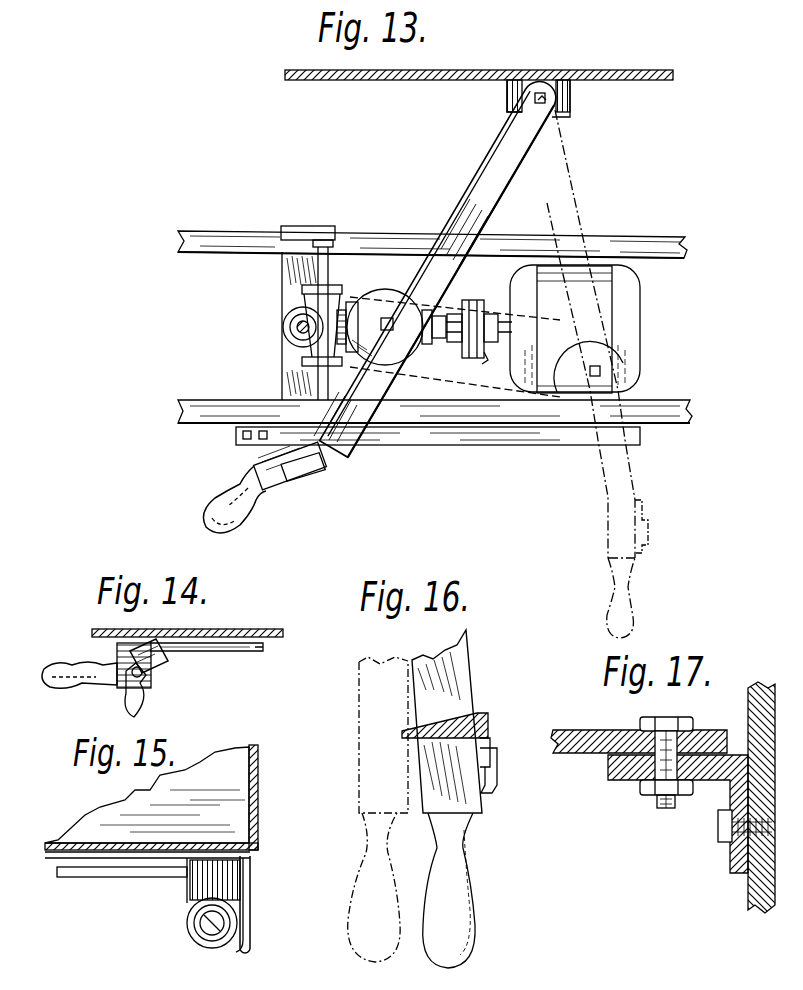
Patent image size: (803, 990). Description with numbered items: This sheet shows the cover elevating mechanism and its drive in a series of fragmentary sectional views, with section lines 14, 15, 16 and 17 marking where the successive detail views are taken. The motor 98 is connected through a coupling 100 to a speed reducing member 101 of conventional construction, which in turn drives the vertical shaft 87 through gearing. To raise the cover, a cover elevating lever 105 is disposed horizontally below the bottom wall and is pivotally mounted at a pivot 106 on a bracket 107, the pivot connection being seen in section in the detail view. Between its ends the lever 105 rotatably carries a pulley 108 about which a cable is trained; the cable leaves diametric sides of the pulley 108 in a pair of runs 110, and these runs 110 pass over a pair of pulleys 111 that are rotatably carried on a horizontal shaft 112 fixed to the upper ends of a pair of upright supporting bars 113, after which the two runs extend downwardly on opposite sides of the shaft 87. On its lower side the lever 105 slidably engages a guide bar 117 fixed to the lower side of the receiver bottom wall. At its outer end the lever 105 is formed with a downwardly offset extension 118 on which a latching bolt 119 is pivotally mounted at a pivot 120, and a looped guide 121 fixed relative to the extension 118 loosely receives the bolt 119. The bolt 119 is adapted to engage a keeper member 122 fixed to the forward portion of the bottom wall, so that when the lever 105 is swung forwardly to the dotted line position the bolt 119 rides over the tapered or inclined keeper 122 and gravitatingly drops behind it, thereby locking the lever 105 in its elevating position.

In FIG. 13, the section line 17— 17 is at (545, 200).
In FIG. 13, the section line 14— 14 is at (233, 553).
In FIG. 14, the section line 15— 15 is at (77, 717).
In FIG. 15, the section line 16— 16 is at (307, 857).
In FIG. 13, the vertical shaft 87 is at (290, 334).
In FIG. 13, the motor 98 is at (640, 296).
In FIG. 13, the coupling 100 is at (492, 367).
In FIG. 13, the speed reducing member 101 is at (420, 350).
In FIG. 13, the cover elevating lever 105 is at (450, 211).
In FIG. 14, the cover elevating lever 105 is at (240, 651).
In FIG. 15, the cover elevating lever 105 is at (188, 945).
In FIG. 16, the cover elevating lever 105 is at (458, 660).
In FIG. 17, the cover elevating lever 105 is at (574, 753).
In FIG. 13, the pivot 106 is at (557, 102).
In FIG. 17, the bracket 107 is at (707, 780).
In FIG. 13, the pulley 108 is at (388, 290).
In FIG. 13, the runs 110 is at (436, 306).
In FIG. 13, the pulleys 111 is at (340, 286).
In FIG. 13, the horizontal shaft 112 is at (328, 266).
In FIG. 13, the upright supporting bars 113 is at (303, 226).
In FIG. 13, the guide bar 117 is at (543, 446).
In FIG. 15, the guide bar 117 is at (97, 877).
In FIG. 14, the downwardly offset extension 118 is at (150, 677).
In FIG. 15, the downwardly offset extension 118 is at (192, 896).
In FIG. 13, the latching bolt 119 is at (318, 456).
In FIG. 14, the latching bolt 119 is at (120, 692).
In FIG. 15, the latching bolt 119 is at (250, 943).
In FIG. 16, the latching bolt 119 is at (484, 743).
In FIG. 14, the pivot 120 is at (142, 683).
In FIG. 14, the looped guide 121 is at (168, 661).
In FIG. 16, the looped guide 121 is at (497, 772).
In FIG. 16, the keeper member 122 is at (468, 712).